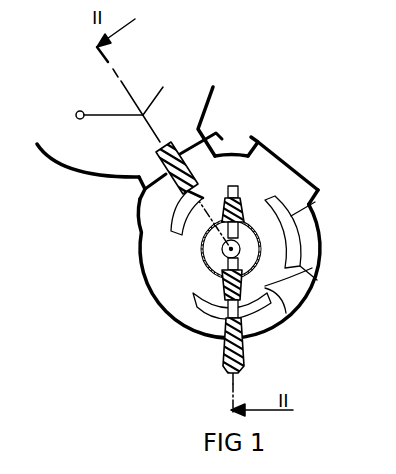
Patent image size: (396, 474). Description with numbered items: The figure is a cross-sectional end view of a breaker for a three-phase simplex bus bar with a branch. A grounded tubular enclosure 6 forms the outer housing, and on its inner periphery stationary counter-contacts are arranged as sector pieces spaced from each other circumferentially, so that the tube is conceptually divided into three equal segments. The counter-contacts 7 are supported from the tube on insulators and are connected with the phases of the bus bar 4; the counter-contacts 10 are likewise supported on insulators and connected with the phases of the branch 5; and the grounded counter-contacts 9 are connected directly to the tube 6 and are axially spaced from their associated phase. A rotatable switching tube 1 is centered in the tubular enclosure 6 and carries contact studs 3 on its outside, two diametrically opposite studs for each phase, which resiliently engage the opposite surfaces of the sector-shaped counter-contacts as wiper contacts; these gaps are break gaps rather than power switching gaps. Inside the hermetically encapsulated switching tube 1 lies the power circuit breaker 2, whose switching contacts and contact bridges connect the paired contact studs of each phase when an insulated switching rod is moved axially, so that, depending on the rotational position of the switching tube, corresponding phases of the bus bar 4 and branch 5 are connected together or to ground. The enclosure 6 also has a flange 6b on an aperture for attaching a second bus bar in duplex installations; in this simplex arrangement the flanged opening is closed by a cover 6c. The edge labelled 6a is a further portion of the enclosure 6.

The switching tube 1 is at (201, 253).
The power circuit breaker 2 is at (303, 297).
The contact studs 3 is at (231, 186).
The bus bar 4 is at (218, 96).
The branch 5 is at (242, 364).
The tubular enclosure 6 is at (322, 257).
The housing inlet edge 6a is at (141, 198).
The flange 6b is at (328, 196).
The cover 6c is at (273, 148).
The counter-contacts 7 is at (178, 220).
The grounded counter-contacts 9 is at (288, 238).
The counter-contacts 10 is at (231, 311).